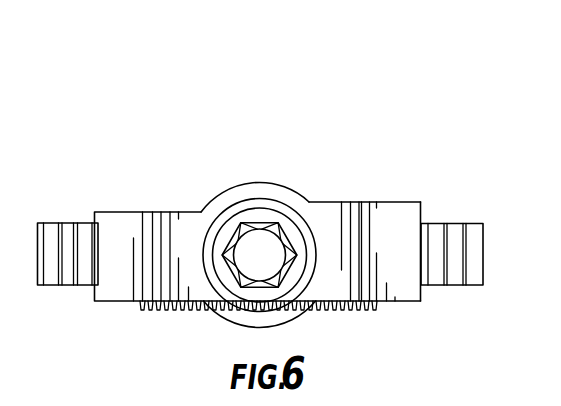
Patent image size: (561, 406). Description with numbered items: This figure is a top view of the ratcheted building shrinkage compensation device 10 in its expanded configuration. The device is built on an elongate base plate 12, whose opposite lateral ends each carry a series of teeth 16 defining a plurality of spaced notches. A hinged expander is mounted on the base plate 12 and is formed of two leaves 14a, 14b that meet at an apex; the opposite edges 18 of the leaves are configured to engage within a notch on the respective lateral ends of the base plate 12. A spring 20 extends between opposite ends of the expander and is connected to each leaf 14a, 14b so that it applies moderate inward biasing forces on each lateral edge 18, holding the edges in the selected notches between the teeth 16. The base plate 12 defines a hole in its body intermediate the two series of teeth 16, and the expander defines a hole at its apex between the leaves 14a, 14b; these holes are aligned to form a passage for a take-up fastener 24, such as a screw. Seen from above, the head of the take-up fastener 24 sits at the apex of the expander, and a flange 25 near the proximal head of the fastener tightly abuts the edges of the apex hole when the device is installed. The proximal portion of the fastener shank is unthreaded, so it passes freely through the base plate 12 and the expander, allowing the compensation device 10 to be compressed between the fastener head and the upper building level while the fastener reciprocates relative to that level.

The ratcheted building shrinkage compensation device 10 is at (109, 203).
The elongate base plate 12 is at (466, 301).
The leaf of the hinged expander 14a is at (145, 224).
The leaf of the hinged expander 14b is at (347, 226).
The teeth 16 is at (445, 223).
The edges of the hinged expander 18 is at (421, 215).
The tension spring 20 is at (343, 308).
The take-up fastener 24 is at (258, 190).
The flange 25 is at (277, 217).